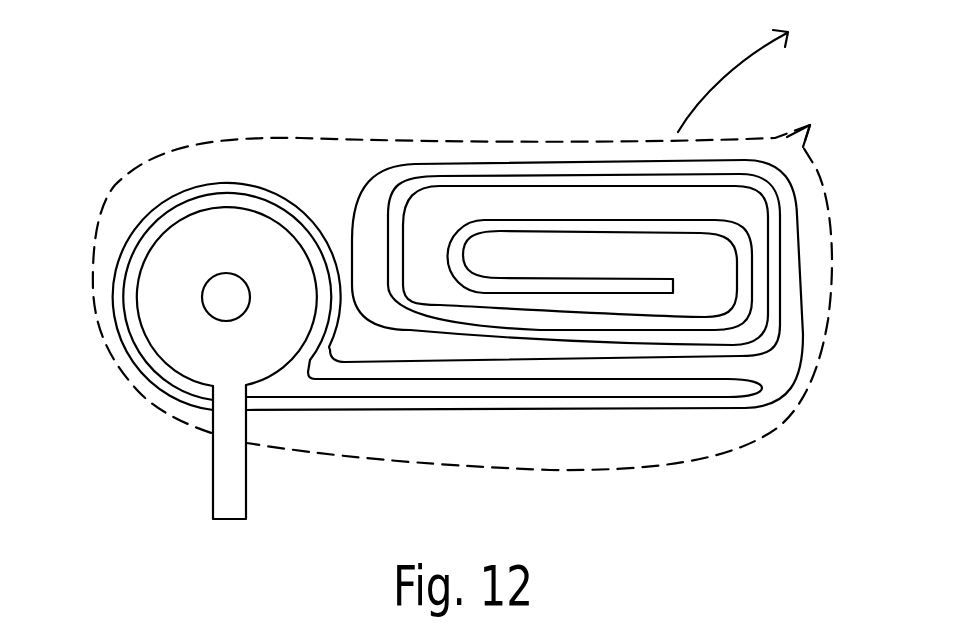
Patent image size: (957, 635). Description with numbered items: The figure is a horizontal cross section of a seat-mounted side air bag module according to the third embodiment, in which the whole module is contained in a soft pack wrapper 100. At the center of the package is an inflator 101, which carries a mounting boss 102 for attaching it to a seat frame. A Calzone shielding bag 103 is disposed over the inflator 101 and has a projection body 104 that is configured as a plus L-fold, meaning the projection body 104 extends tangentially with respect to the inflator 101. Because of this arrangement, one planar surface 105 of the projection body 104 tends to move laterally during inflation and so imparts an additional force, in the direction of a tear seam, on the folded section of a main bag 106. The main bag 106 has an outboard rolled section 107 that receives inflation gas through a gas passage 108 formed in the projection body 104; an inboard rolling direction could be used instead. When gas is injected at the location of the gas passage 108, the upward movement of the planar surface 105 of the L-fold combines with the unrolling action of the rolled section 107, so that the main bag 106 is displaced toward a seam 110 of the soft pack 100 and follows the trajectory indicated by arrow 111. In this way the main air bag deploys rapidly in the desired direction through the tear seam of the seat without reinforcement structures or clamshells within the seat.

The soft pack wrapper 100 is at (337, 137).
The inflator 101 is at (173, 342).
The mounting boss 102 is at (212, 486).
The shielding bag 103 is at (140, 230).
The projection body 104 is at (368, 398).
The planar surface 105 is at (452, 381).
The main bag 106 is at (217, 181).
The rolled section 107 is at (459, 161).
The gas passage 108 is at (722, 381).
The seam 110 is at (824, 136).
The arrow 111 is at (712, 84).